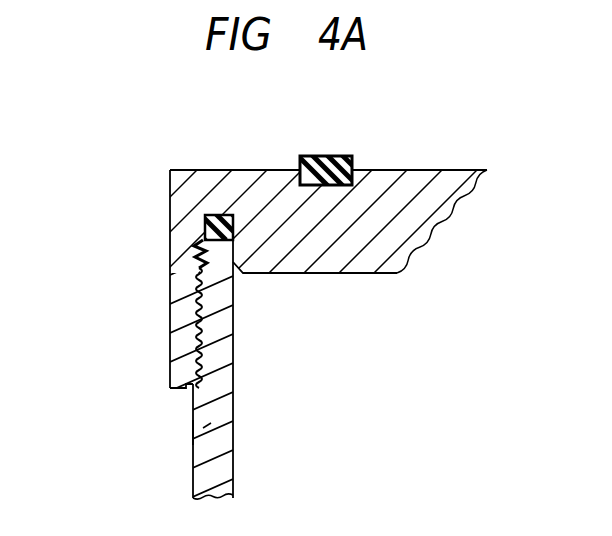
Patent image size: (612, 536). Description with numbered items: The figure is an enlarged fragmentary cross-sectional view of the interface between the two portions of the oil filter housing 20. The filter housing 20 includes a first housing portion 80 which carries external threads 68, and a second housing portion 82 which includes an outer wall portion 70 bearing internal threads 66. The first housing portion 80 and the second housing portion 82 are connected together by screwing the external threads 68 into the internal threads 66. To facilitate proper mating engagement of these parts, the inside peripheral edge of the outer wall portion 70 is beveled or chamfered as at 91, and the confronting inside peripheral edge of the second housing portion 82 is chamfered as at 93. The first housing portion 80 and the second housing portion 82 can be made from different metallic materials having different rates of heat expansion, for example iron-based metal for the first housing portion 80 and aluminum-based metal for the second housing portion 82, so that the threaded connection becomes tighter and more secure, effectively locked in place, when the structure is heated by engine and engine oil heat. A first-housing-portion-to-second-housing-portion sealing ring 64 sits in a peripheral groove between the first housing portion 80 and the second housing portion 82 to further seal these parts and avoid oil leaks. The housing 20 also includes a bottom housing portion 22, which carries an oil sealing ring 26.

The bottom housing portion 22 is at (188, 192).
The oil sealing ring 26 is at (351, 158).
The first-housing-portion-to-second-housing-portion sealing ring 64 is at (198, 236).
The external threads 68 is at (198, 256).
The internal threads 66 is at (198, 290).
The outer wall portion 70 is at (170, 348).
The chamfer 91 is at (187, 388).
The oil filter housing 20 is at (193, 433).
The second housing portion 82 is at (383, 270).
The chamfer 93 is at (240, 273).
The first housing portion 80 is at (237, 358).